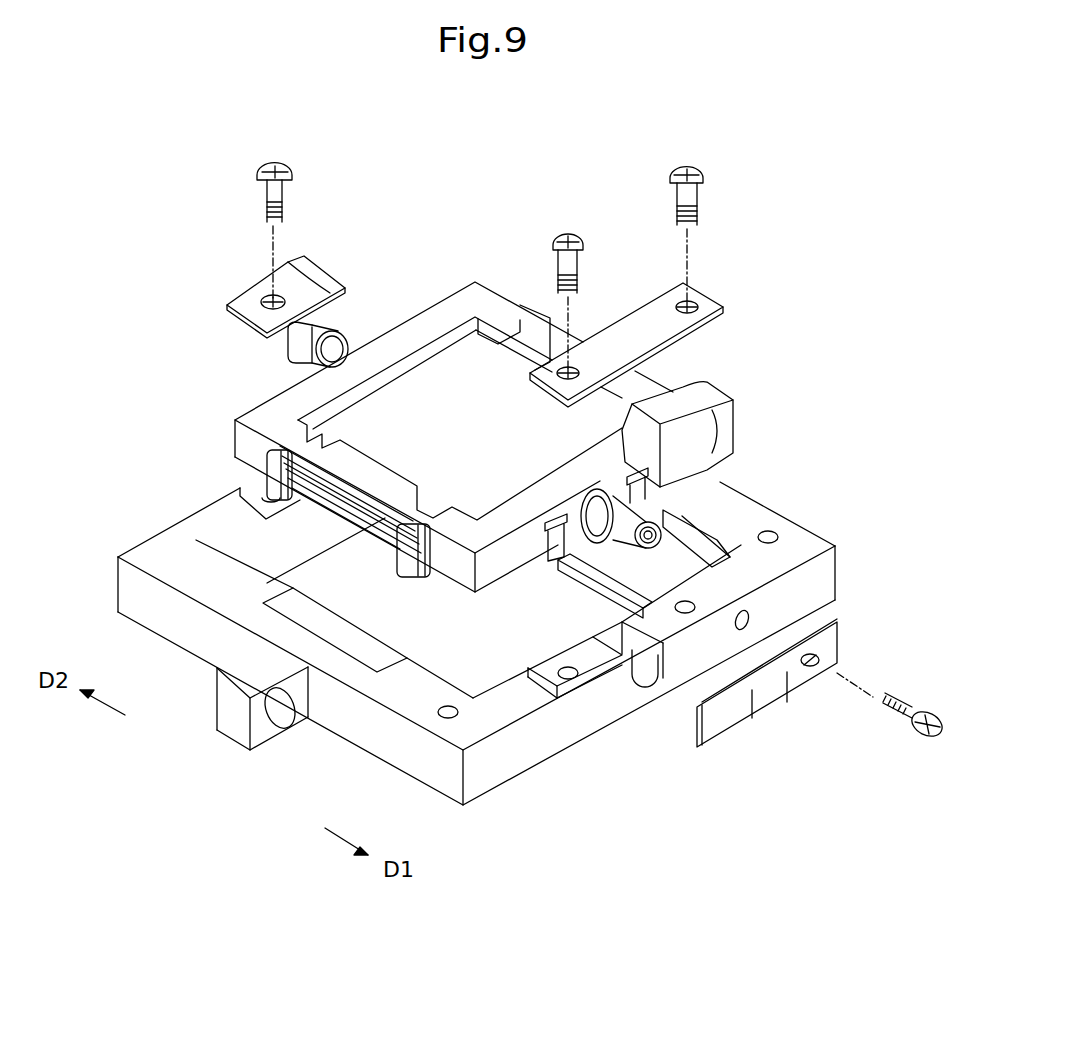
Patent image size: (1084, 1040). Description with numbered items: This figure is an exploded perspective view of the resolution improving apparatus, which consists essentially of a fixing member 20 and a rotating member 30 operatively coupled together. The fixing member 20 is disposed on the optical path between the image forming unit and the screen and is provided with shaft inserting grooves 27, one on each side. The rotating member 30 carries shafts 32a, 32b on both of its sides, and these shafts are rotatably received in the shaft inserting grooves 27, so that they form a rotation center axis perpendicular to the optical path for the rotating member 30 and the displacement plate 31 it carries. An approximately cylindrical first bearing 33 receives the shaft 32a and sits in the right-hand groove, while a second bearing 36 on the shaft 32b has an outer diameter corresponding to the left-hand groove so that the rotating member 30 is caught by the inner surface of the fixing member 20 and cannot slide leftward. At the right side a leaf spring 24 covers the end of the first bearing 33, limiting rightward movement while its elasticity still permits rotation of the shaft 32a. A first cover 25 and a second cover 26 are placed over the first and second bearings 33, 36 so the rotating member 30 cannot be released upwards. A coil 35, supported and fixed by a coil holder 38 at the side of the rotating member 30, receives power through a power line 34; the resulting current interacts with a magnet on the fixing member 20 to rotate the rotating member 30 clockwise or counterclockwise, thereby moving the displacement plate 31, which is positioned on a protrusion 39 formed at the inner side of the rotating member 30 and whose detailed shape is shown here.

The fixing member 20 is at (823, 583).
The leaf spring 24 is at (740, 716).
The first cover 25 is at (640, 312).
The second cover 26 is at (248, 297).
The shaft inserting groove 27 is at (655, 672).
The rotating member 30 is at (683, 417).
The displacement plate 31 is at (468, 352).
The shaft 32a is at (603, 490).
The shaft 32b is at (343, 343).
The first bearing 33 is at (700, 465).
The power line 34 is at (713, 557).
The coil 35 is at (282, 427).
The second bearing 36 is at (300, 343).
The coil holder 38 is at (276, 473).
The protrusion 39 is at (372, 472).